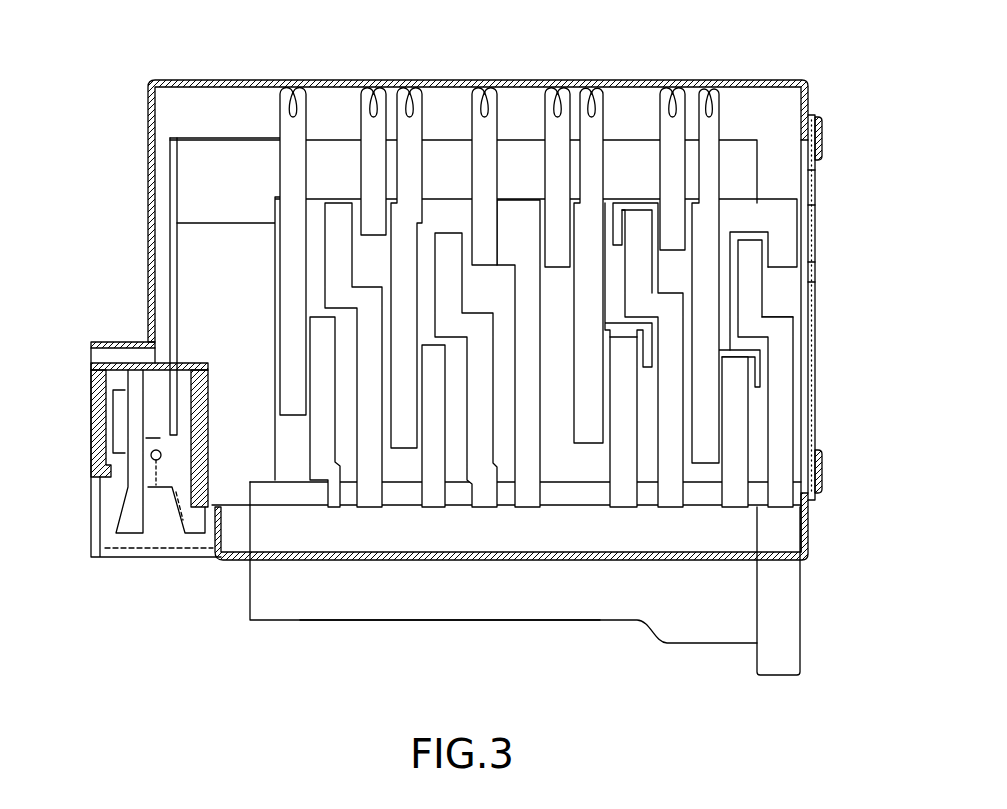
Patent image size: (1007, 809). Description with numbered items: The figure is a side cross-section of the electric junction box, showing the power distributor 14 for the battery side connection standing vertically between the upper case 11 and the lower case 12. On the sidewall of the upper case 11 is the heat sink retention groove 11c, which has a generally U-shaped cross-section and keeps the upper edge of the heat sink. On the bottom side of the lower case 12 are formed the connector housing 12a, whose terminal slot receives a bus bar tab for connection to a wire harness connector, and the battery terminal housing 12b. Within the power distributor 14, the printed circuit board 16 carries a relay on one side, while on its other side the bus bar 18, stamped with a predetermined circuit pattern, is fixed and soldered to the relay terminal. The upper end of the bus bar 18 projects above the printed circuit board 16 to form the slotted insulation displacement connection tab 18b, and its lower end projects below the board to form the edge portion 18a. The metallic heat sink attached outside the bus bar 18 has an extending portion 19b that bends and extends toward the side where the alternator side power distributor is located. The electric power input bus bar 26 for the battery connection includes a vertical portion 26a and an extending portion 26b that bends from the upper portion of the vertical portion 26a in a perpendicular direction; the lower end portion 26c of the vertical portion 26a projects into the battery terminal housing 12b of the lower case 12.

The upper case 11 is at (801, 80).
The heat sink retention groove 11c is at (822, 136).
The lower case 12 is at (561, 591).
The connector housing 12a is at (333, 621).
The battery terminal housing 12b is at (90, 468).
The power distributor 14 is at (805, 351).
The printed circuit board 16 is at (812, 272).
The bus bar 18 is at (583, 277).
The edge portion 18a is at (783, 500).
The insulation displacement connection tab 18b is at (724, 103).
The extending portion 19b is at (815, 188).
The bus bar 26 is at (173, 233).
The vertical portion 26a is at (170, 235).
The extending portion 26b is at (190, 137).
The lower end portion 26c is at (172, 405).